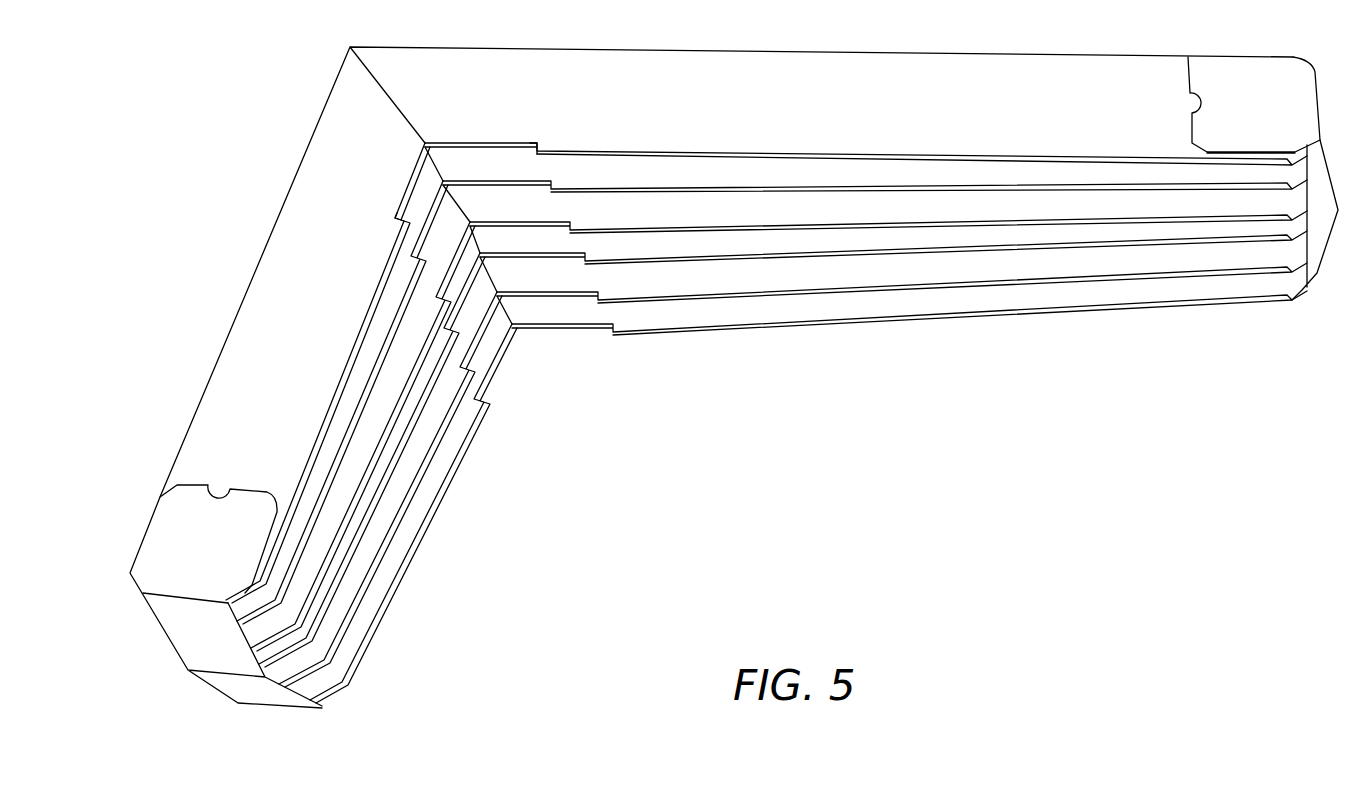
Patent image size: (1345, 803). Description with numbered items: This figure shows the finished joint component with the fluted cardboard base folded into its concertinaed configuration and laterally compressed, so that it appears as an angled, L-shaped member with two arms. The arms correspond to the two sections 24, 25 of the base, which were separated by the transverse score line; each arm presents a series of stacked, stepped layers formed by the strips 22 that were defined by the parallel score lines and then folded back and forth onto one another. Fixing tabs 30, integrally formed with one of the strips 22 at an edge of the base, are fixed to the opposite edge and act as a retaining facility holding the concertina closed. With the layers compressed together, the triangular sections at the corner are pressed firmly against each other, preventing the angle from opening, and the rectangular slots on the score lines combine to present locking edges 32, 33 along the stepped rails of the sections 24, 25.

The strips 22 is at (813, 112).
The fixing tabs 30 is at (1275, 121).
The section 24 is at (948, 304).
The section 25 is at (430, 489).
The locking edge 32 is at (536, 148).
The locking edge 33 is at (393, 228).